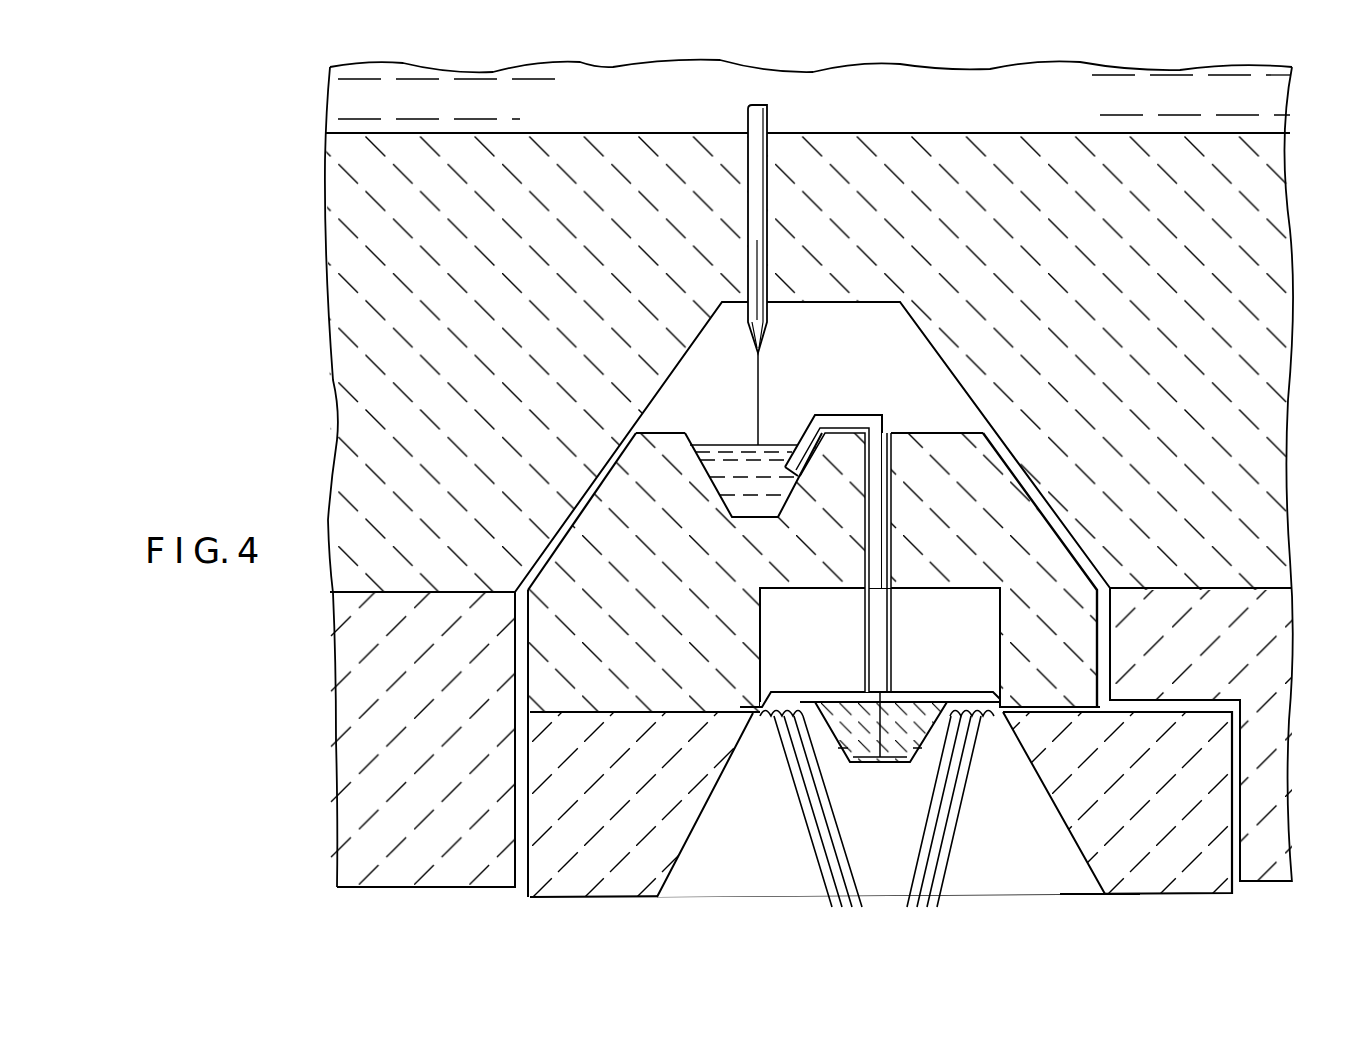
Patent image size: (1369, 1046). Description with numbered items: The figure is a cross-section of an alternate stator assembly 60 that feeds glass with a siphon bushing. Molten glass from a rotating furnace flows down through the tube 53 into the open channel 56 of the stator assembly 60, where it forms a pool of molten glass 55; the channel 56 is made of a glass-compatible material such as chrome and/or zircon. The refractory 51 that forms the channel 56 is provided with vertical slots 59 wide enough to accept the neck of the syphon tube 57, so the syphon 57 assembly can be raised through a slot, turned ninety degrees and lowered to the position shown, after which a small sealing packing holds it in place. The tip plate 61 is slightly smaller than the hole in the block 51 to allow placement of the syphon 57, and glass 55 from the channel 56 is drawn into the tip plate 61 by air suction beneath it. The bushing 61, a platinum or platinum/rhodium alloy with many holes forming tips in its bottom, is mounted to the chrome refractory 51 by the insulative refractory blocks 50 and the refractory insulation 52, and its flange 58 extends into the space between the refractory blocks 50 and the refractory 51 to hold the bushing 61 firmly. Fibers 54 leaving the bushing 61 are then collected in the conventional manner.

The insulative refractory blocks 50 is at (603, 885).
The refractory 51 is at (663, 581).
The refractory insulation 52 is at (343, 718).
The tube 53 is at (767, 116).
The fibers 54 is at (953, 832).
The pool of molten glass 55 is at (768, 445).
The open channel 56 is at (720, 437).
The syphon tube 57 is at (825, 415).
The flange 58 is at (1012, 705).
The vertical slots 59 is at (888, 433).
The stator assembly 60 is at (1102, 905).
The tip plate 61 is at (915, 690).